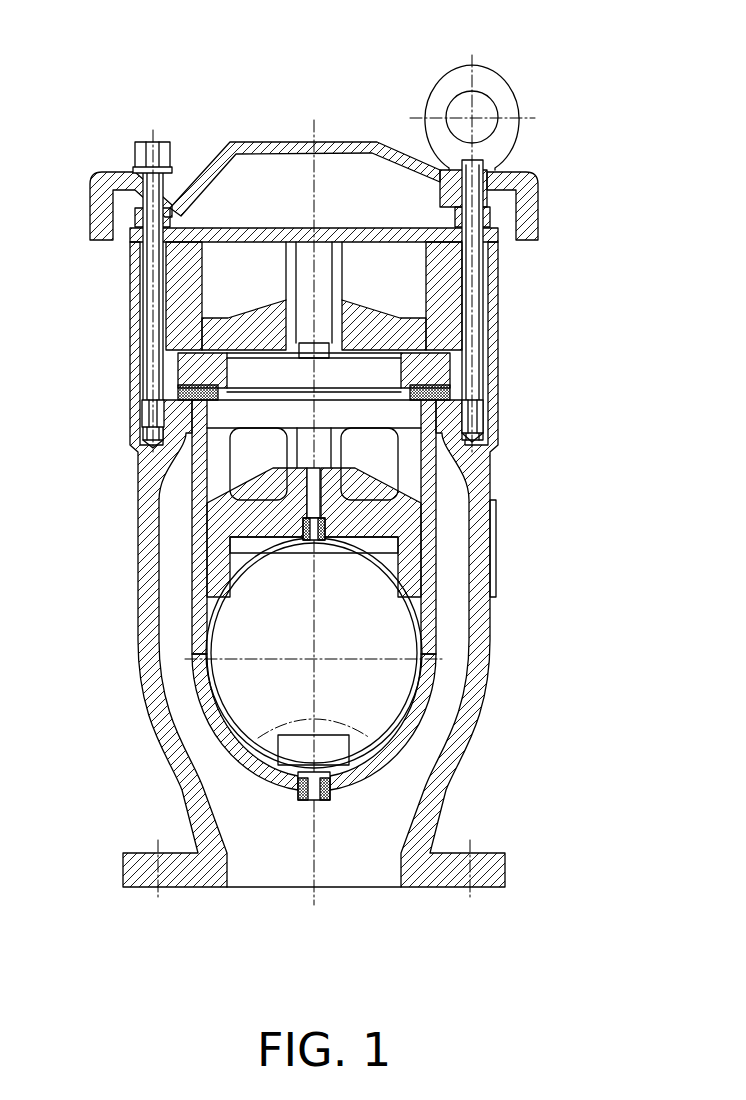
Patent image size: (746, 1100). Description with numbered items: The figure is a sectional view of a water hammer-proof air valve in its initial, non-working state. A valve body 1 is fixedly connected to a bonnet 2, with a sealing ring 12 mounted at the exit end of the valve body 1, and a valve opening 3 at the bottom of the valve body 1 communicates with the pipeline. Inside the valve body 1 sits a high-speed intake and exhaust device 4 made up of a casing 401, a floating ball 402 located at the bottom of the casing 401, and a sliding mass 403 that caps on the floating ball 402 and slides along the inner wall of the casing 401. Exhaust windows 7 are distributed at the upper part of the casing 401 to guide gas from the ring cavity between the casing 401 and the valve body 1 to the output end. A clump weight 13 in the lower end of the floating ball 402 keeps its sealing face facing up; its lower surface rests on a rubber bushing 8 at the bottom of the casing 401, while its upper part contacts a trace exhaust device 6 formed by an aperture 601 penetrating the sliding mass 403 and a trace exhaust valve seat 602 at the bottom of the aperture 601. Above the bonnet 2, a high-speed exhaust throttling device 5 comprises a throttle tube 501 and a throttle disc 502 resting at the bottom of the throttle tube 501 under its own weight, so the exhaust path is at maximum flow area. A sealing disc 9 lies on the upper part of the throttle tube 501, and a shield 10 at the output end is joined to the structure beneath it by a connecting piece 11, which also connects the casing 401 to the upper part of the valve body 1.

The valve body 1 is at (432, 790).
The bonnet 2 is at (440, 372).
The valve opening 3 is at (328, 880).
The high-speed intake and exhaust device 4 is at (621, 692).
The casing 401 is at (413, 717).
The floating ball 402 is at (400, 674).
The sliding mass 403 is at (365, 498).
The high-speed exhaust throttling device 5 is at (621, 208).
The throttle tube 501 is at (442, 282).
The throttle disc 502 is at (402, 328).
The trace exhaust device 6 is at (621, 545).
The aperture 601 is at (313, 495).
The trace exhaust valve seat 602 is at (322, 535).
The exhaust window 7 is at (200, 478).
The rubber bushing 8 is at (300, 790).
The sealing disc 9 is at (447, 235).
The shield 10 is at (500, 178).
The connecting piece 11 is at (468, 155).
The sealing ring 12 is at (435, 395).
The clump weight 13 is at (323, 740).